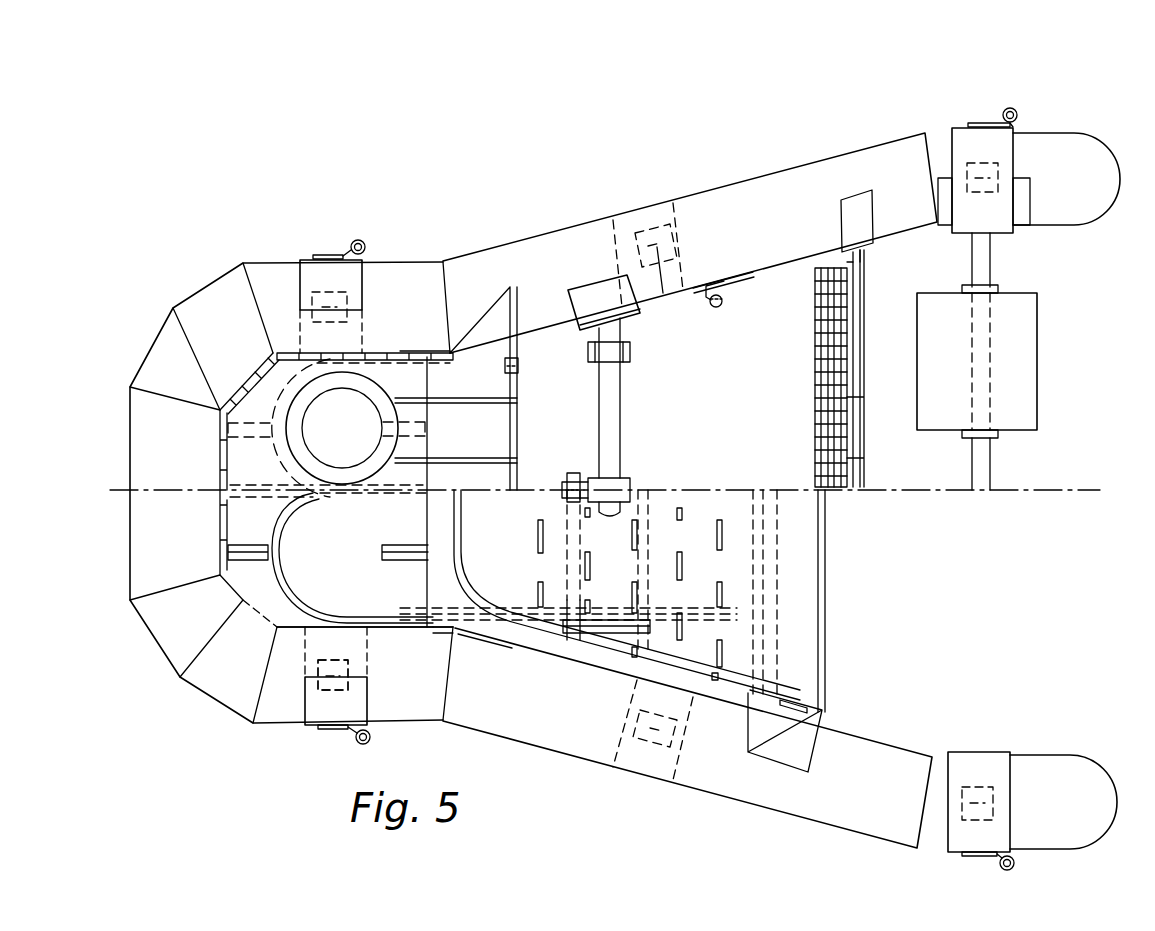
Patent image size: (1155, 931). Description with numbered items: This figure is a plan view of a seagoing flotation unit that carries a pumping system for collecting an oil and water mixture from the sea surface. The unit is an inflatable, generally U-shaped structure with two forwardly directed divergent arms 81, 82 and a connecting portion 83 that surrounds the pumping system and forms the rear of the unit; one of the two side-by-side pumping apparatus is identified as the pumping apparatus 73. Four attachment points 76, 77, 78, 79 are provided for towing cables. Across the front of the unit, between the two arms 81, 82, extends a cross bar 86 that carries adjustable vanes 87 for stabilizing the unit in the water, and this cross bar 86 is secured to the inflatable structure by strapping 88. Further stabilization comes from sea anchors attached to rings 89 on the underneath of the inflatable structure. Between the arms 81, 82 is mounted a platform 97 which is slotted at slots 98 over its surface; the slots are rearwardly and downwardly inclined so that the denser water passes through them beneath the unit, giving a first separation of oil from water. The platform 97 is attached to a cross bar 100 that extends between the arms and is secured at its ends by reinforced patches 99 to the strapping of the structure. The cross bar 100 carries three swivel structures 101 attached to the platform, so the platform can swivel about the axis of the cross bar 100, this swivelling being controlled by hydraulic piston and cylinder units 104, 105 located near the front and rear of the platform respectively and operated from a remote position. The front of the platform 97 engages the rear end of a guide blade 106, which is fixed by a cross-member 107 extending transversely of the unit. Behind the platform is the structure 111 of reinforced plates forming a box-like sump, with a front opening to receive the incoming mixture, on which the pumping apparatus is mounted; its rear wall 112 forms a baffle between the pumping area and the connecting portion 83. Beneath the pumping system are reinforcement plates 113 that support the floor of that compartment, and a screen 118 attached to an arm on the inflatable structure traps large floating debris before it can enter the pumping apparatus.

The pumping apparatus 73 is at (343, 410).
The attachment point 76 is at (1018, 116).
The attachment point 77 is at (358, 240).
The attachment point 78 is at (1015, 863).
The attachment point 79 is at (370, 740).
The arm 81 is at (753, 187).
The arm 82 is at (767, 787).
The connecting portion 83 is at (177, 612).
The cross bar 86 is at (990, 470).
The adjustable vane 87 is at (1020, 320).
The strapping 88 is at (993, 212).
The ring 89 is at (333, 690).
The platform 97 is at (680, 663).
The slots 98 is at (780, 590).
The reinforced patch 99 is at (592, 288).
The cross bar 100 is at (620, 333).
The swivel structure 101 is at (630, 480).
The hydraulic piston and cylinder unit 104 is at (505, 364).
The hydraulic piston and cylinder unit 105 is at (724, 302).
The guide blade 106 is at (812, 643).
The cross-member 107 is at (780, 690).
The structure 111 is at (255, 527).
The rear wall 112 is at (227, 513).
The reinforcement plate 113 is at (415, 490).
The screen 118 is at (820, 372).